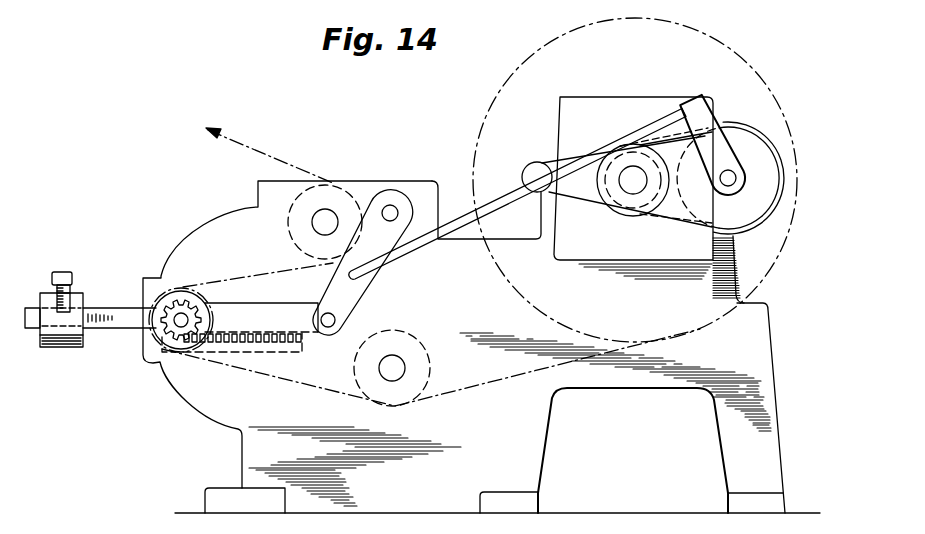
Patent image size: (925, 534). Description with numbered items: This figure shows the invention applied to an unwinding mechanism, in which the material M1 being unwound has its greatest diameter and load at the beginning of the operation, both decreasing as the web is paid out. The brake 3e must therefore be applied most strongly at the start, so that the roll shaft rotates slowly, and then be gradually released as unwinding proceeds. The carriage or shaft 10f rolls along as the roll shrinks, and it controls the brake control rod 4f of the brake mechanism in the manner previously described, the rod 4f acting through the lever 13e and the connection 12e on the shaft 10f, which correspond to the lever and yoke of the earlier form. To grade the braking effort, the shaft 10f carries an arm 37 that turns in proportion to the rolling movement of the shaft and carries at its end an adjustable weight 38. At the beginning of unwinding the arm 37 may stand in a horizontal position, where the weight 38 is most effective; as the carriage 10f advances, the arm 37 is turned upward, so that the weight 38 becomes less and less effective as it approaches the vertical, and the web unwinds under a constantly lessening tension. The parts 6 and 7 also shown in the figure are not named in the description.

The material M1 is at (722, 48).
The drive pulley 3e is at (762, 110).
The brake control rod 4f is at (441, 238).
The guide pulley 6 is at (335, 181).
The guide pulley 7 is at (433, 368).
The carriage or shaft 10f is at (180, 321).
The pivot pin 12e is at (320, 333).
The lever 13e is at (357, 298).
The arm 37 is at (107, 328).
The adjustable weight 38 is at (102, 276).